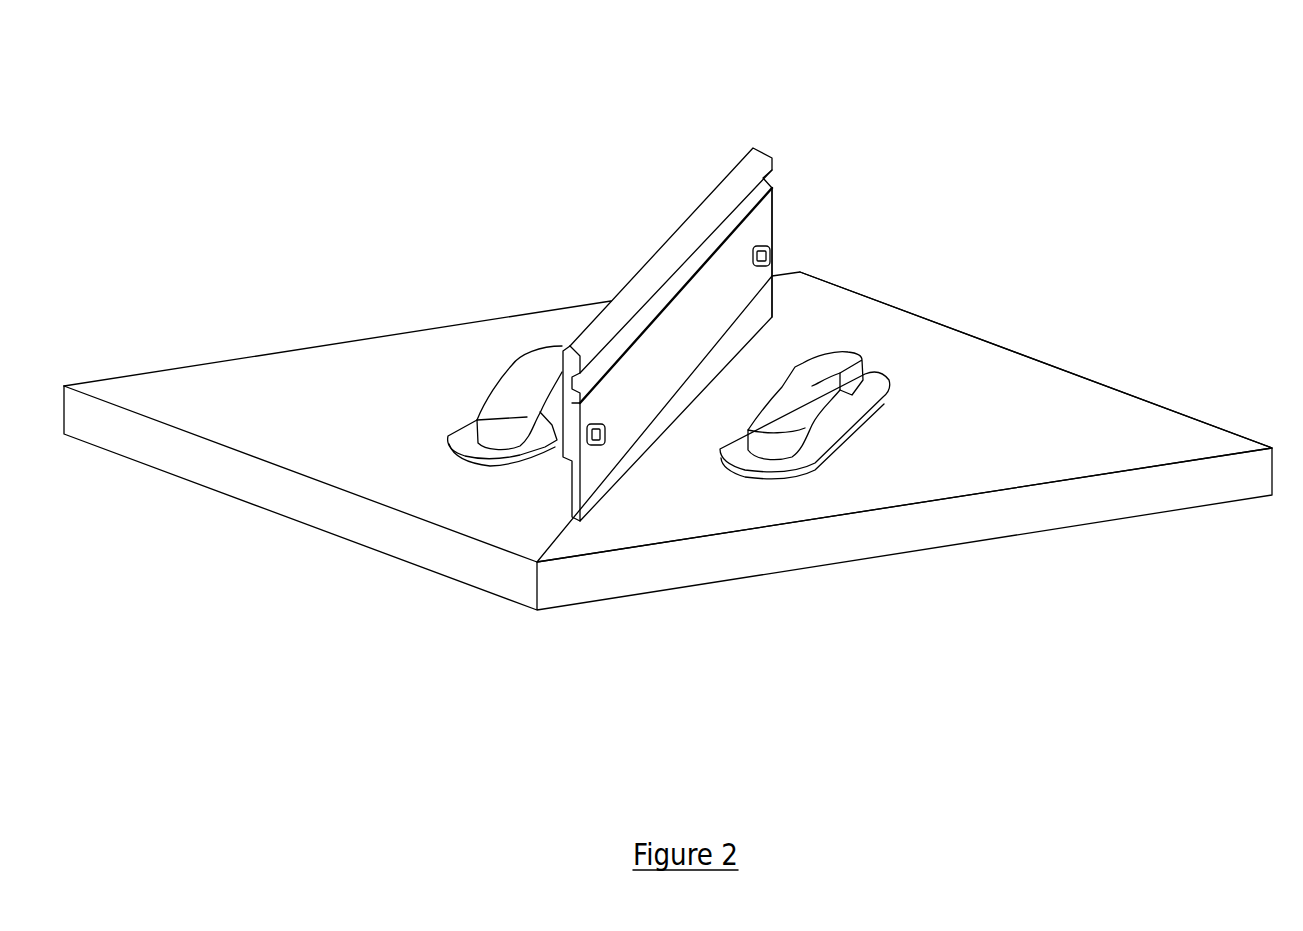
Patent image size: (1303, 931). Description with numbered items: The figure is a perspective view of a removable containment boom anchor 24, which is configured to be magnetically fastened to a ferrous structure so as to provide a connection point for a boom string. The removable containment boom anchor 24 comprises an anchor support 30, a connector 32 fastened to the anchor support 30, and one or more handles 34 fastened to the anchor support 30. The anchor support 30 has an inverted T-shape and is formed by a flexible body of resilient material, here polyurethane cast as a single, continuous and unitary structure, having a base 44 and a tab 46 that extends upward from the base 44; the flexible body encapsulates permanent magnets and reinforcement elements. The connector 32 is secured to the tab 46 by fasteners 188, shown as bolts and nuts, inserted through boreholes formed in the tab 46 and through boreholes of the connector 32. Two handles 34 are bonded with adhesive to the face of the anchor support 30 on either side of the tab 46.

The removable containment boom anchor 24 is at (1097, 70).
The anchor support 30 is at (199, 393).
The connector 32 is at (654, 268).
The handle 34 is at (522, 372).
The base 44 is at (1092, 397).
The tab 46 is at (733, 302).
The fasteners 188 is at (764, 252).